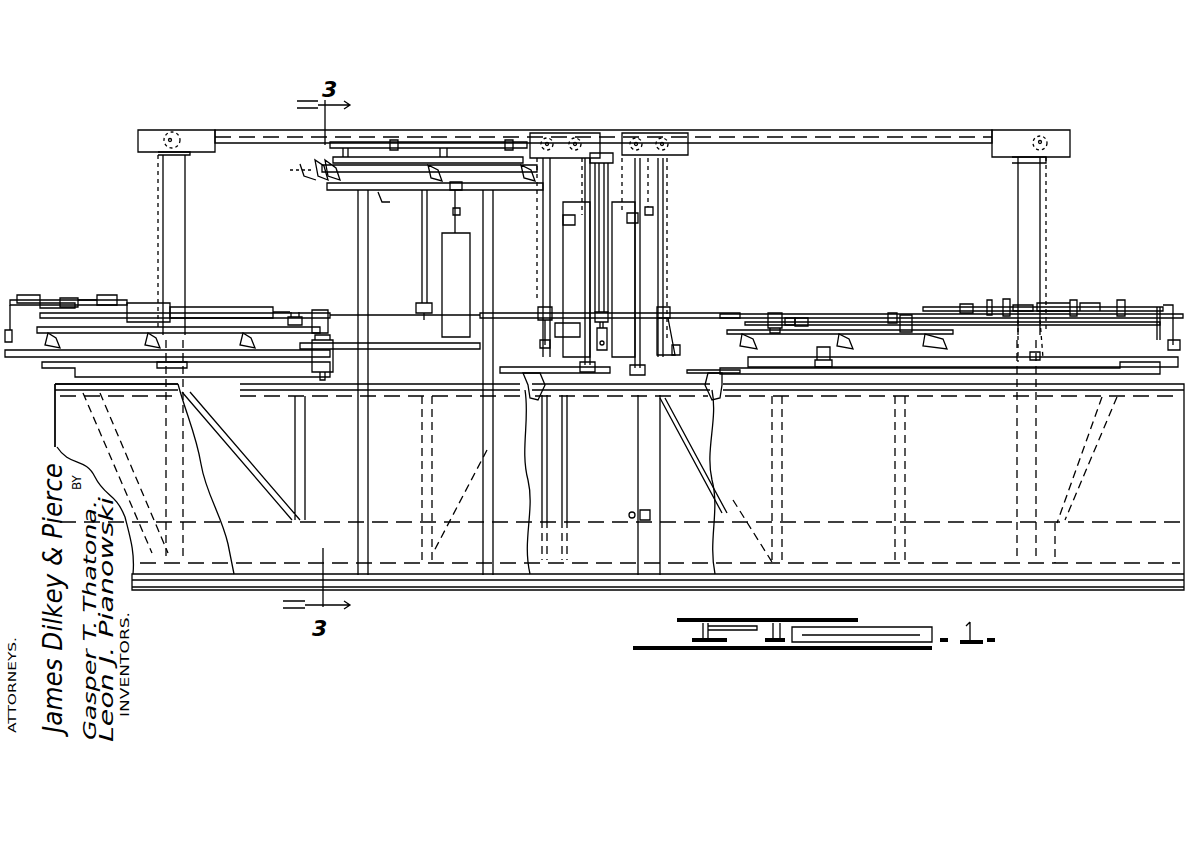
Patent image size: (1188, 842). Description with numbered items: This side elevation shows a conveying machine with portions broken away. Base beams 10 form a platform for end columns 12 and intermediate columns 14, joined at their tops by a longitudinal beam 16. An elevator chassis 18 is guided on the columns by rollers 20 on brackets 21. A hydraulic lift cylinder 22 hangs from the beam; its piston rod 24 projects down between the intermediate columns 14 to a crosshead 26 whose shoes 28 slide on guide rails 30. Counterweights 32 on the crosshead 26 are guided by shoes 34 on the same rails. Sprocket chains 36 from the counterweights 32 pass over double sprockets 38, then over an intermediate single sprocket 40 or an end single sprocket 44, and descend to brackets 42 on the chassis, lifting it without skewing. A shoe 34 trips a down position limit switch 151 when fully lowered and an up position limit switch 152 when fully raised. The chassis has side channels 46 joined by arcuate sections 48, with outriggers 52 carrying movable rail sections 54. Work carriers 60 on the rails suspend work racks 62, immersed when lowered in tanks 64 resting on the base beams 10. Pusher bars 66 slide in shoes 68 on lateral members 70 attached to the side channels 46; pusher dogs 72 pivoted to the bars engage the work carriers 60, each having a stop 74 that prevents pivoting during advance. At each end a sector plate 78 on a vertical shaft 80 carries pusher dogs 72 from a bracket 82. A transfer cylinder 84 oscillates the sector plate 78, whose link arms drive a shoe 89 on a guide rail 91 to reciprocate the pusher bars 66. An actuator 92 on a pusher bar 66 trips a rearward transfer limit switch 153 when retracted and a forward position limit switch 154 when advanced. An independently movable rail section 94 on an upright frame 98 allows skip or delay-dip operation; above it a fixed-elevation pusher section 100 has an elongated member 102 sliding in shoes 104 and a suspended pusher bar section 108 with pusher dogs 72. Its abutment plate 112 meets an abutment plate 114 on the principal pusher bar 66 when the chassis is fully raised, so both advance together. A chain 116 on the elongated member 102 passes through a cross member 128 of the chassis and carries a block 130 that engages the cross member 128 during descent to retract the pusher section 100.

The base beams 10 is at (608, 597).
The end columns 12 is at (178, 237).
The intermediate columns 14 is at (555, 257).
The longitudinal beam 16 is at (752, 131).
The elevator chassis 18 is at (734, 310).
The rollers 20 is at (547, 305).
The brackets 21 is at (540, 325).
The hydraulic double-acting lift cylinder 22 is at (605, 245).
The piston rod 24 is at (598, 362).
The crosshead 26 is at (603, 358).
The shoes 28 is at (522, 400).
The guide rails 30 is at (640, 456).
The counterweights 32 is at (637, 278).
The shoes 34 is at (563, 222).
The sprocket chains 36 is at (601, 153).
The double sprockets 38 is at (575, 130).
The intermediate single sprocket 40 is at (535, 135).
The bracket 42 is at (570, 367).
The end single sprocket 44 is at (187, 128).
The side channels 46 is at (430, 348).
The arcuate sections 48 is at (42, 355).
The outriggers 52 is at (815, 368).
The movable rail sections 54 is at (875, 368).
The work carriers 60 is at (458, 203).
The work rack 62 is at (448, 268).
The tanks 64 is at (65, 418).
The pusher bars 66 is at (210, 325).
The shoes 68 is at (320, 316).
The lateral members 70 is at (770, 318).
The pusher dogs 72 is at (238, 336).
The stop 74 is at (150, 336).
The sector plate 78 is at (52, 298).
The vertical shaft 80 is at (75, 300).
The bracket 82 is at (15, 298).
The transfer cylinder 84 is at (1038, 305).
The shoe 89 is at (140, 305).
The guide rail 91 is at (200, 312).
The actuator 92 is at (810, 322).
The rail section 94 is at (386, 192).
The upright frame 98 is at (368, 254).
The pusher section 100 is at (364, 186).
The elongated member 102 is at (362, 143).
The shoes 104 is at (398, 143).
The pusher bar section 108 is at (378, 190).
The abutment plate 112 is at (320, 170).
The abutment plate 114 is at (300, 178).
The chain 116 is at (422, 232).
The cross member 128 is at (417, 308).
The block 130 is at (422, 344).
The down position limit switch 151 is at (655, 208).
The up position limit switch 152 is at (645, 512).
The rearward transfer limit switch 153 is at (795, 318).
The forward position limit switch 154 is at (895, 318).